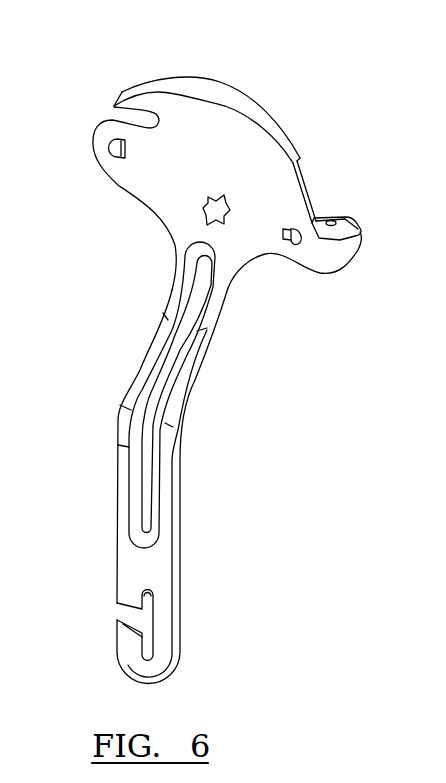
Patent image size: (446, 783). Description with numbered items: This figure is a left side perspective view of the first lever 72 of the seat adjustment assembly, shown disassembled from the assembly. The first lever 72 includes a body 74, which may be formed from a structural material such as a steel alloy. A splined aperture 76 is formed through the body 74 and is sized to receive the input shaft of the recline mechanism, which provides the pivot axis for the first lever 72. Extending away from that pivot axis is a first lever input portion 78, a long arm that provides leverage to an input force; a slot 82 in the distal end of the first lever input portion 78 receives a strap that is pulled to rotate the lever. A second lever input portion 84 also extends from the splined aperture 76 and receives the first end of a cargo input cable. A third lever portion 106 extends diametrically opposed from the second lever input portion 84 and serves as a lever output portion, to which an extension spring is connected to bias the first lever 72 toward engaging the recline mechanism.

The first lever 72 is at (85, 52).
The body 74 is at (157, 175).
The splined aperture 76 is at (205, 213).
The first lever input portion 78 is at (132, 568).
The slot 82 is at (153, 623).
The second lever input portion 84 is at (90, 152).
The third lever portion 106 is at (270, 195).